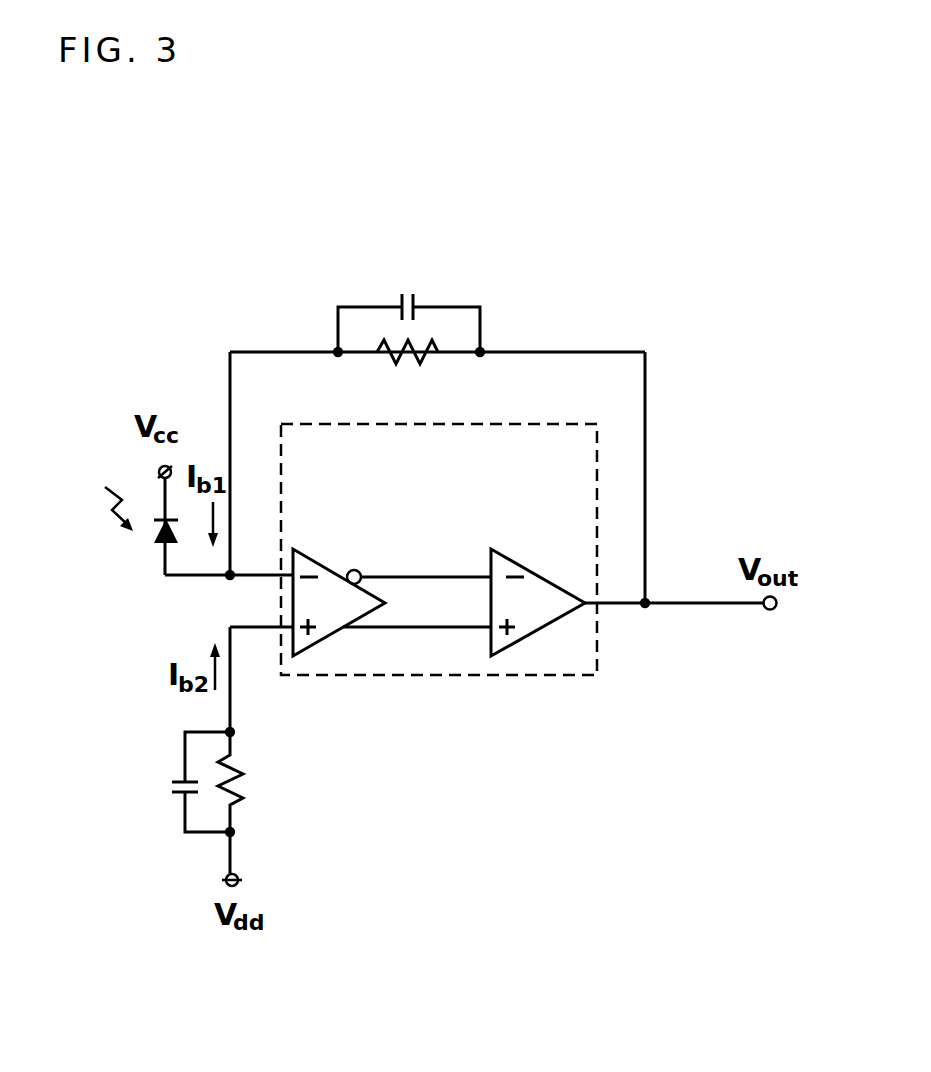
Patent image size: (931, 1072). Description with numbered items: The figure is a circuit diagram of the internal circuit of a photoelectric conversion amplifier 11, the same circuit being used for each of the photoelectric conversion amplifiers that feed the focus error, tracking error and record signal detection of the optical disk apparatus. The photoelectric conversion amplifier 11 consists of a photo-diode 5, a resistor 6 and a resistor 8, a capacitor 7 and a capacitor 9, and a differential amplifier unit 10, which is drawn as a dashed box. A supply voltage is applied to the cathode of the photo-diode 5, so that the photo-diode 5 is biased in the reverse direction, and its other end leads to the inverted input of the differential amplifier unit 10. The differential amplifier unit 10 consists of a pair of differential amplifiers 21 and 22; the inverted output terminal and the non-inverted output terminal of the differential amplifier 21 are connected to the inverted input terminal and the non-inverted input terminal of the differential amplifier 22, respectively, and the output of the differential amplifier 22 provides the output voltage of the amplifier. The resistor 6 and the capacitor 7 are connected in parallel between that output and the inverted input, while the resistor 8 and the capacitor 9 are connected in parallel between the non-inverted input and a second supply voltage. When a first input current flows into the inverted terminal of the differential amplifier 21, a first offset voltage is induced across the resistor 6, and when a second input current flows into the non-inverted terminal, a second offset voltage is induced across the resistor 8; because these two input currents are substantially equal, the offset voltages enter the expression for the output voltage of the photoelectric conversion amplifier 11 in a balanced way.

The photo-diode 5 is at (162, 538).
The resistor 6 is at (415, 362).
The capacitor 7 is at (420, 296).
The resistor 8 is at (240, 780).
The capacitor 9 is at (170, 782).
The differential amplifier unit 10 is at (343, 425).
The photoelectric conversion amplifier 11 is at (626, 251).
The differential amplifier 21 is at (333, 626).
The differential amplifier 22 is at (548, 619).